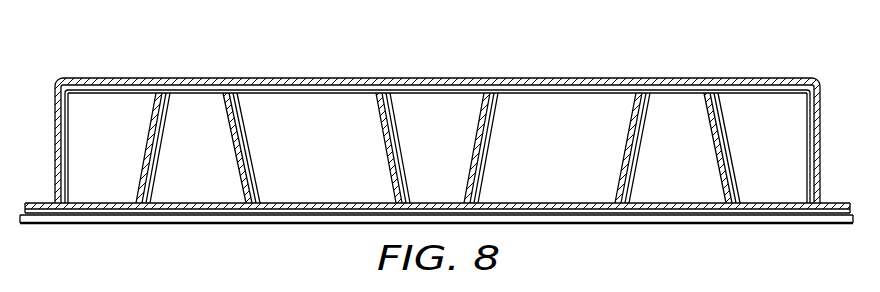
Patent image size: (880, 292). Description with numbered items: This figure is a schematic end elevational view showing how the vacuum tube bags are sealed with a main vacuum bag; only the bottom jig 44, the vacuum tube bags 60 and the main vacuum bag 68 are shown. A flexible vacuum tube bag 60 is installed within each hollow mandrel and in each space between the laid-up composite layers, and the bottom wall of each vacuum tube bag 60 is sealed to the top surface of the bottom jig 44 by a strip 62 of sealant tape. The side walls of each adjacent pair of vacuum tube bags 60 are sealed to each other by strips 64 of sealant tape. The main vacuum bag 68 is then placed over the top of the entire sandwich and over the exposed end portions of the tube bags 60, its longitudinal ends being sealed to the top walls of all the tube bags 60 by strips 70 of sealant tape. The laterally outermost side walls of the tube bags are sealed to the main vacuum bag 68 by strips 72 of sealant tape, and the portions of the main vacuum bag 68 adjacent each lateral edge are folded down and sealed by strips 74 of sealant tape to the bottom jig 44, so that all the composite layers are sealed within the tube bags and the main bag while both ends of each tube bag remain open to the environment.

The bottom jig 44 is at (181, 225).
The vacuum tube bag 60 is at (437, 148).
The strip of sealant tape 62 is at (278, 215).
The strips of sealant tape 64 is at (151, 124).
The main vacuum bag 68 is at (437, 64).
The strips of sealant tape 70 is at (440, 78).
The strips of sealant tape 72 is at (55, 103).
The strips of sealant tape 74 is at (47, 204).